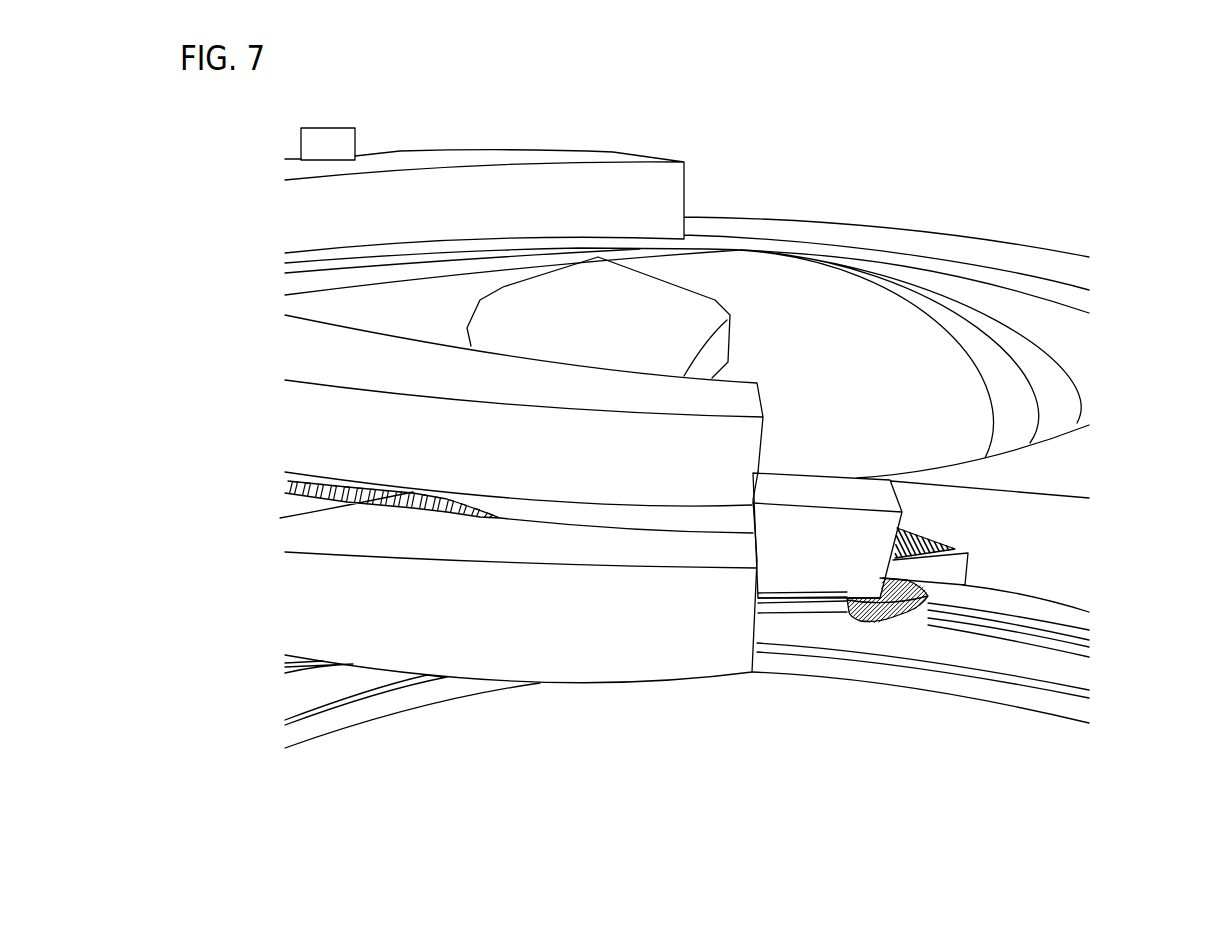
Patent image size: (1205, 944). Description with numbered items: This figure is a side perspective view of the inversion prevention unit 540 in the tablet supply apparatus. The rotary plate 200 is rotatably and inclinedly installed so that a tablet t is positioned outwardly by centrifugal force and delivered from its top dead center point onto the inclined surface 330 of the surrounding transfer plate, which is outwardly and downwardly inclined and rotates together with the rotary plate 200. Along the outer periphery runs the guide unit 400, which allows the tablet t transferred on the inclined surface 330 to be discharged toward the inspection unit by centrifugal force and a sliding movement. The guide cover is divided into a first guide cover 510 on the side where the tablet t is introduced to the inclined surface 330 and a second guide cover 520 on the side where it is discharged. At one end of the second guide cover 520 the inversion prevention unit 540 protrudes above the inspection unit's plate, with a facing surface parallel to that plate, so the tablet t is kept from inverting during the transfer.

The first guide cover 510 is at (300, 216).
The rotary plate 200 is at (927, 380).
The inclined surface 330 is at (345, 503).
The second guide cover 520 is at (578, 449).
The guide unit 400 is at (657, 655).
The inversion prevention unit 540 is at (812, 560).
The tablet t is at (907, 595).